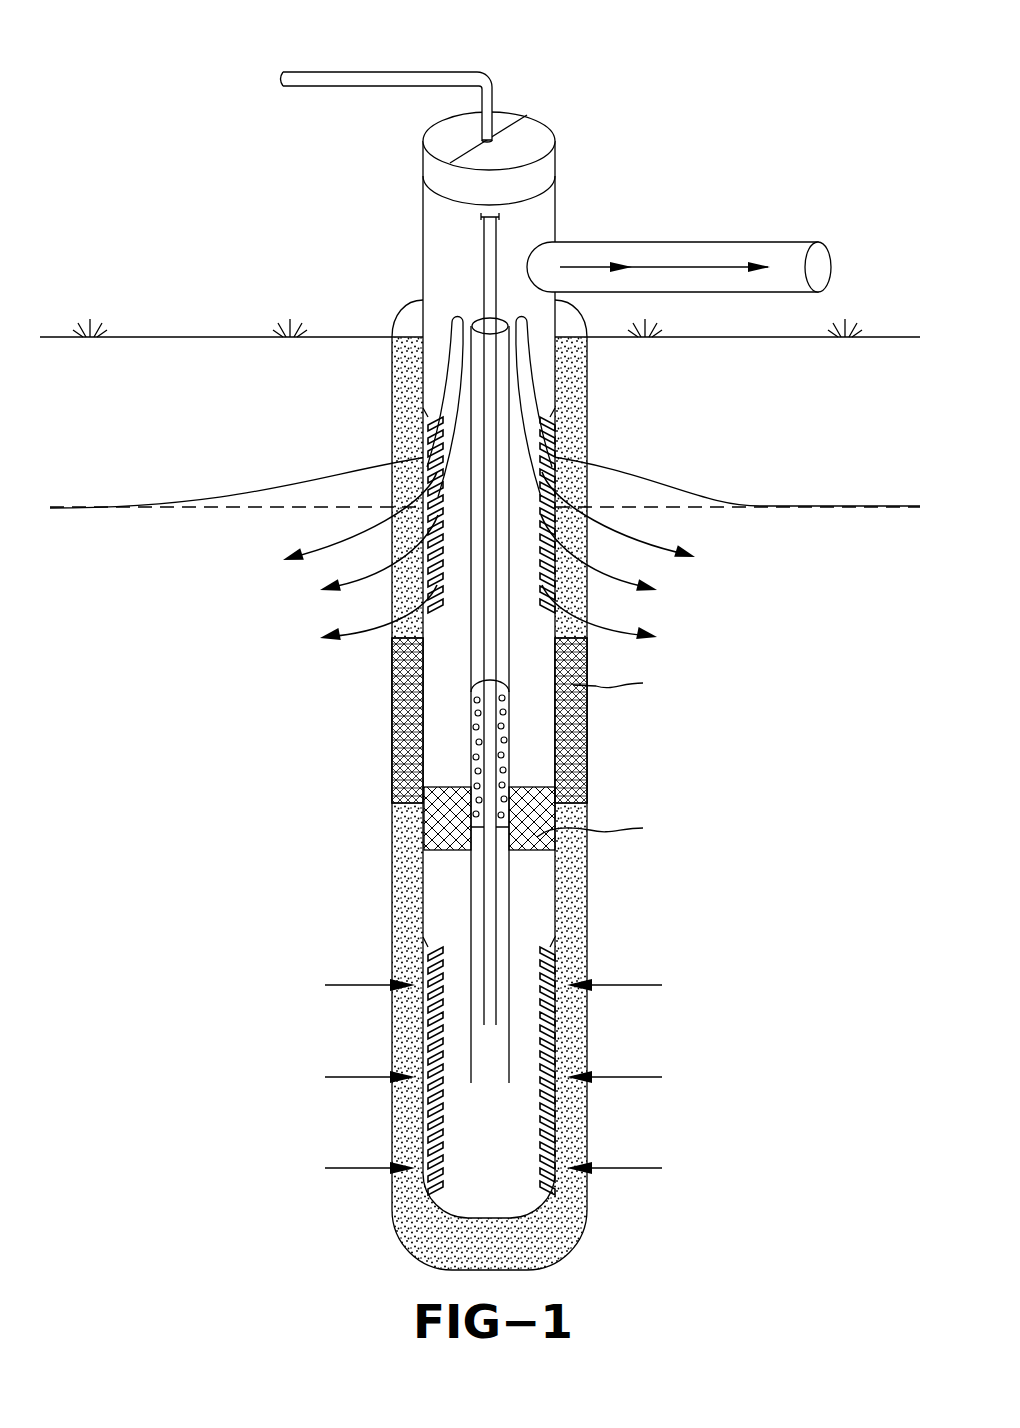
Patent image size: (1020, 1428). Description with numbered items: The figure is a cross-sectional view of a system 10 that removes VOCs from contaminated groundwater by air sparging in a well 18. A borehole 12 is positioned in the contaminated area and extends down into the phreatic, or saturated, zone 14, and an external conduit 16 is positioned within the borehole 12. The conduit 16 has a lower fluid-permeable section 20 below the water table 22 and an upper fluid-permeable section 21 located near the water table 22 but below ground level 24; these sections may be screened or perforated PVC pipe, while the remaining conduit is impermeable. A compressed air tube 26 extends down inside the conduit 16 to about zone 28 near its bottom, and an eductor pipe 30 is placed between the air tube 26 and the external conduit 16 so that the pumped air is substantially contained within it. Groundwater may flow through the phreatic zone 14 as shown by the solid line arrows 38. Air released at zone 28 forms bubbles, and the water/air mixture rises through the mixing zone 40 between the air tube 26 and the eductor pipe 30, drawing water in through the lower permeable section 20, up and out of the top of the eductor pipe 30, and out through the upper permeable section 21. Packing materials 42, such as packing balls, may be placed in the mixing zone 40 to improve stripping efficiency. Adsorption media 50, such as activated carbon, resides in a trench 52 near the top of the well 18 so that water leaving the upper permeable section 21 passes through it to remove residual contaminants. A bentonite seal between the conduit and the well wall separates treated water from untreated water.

The system 10 is at (480, 638).
The borehole 12 is at (392, 407).
The phreatic zone 14 is at (393, 950).
The external conduit 16 is at (558, 900).
The well 18 is at (600, 368).
The lower fluid-permeable section 20 is at (545, 1132).
The upper fluid-permeable section 21 is at (535, 525).
The water table 22 is at (852, 505).
The ground level 24 is at (890, 337).
The compressed air tube 26 is at (487, 877).
The zone 28 is at (512, 1013).
The eductor pipe 30 is at (510, 735).
The solid line arrows 38 is at (492, 1077).
The mixing zone 40 is at (416, 700).
The packing materials 42 is at (472, 742).
The adsorption media 50 is at (403, 535).
The trench 52 is at (588, 420).